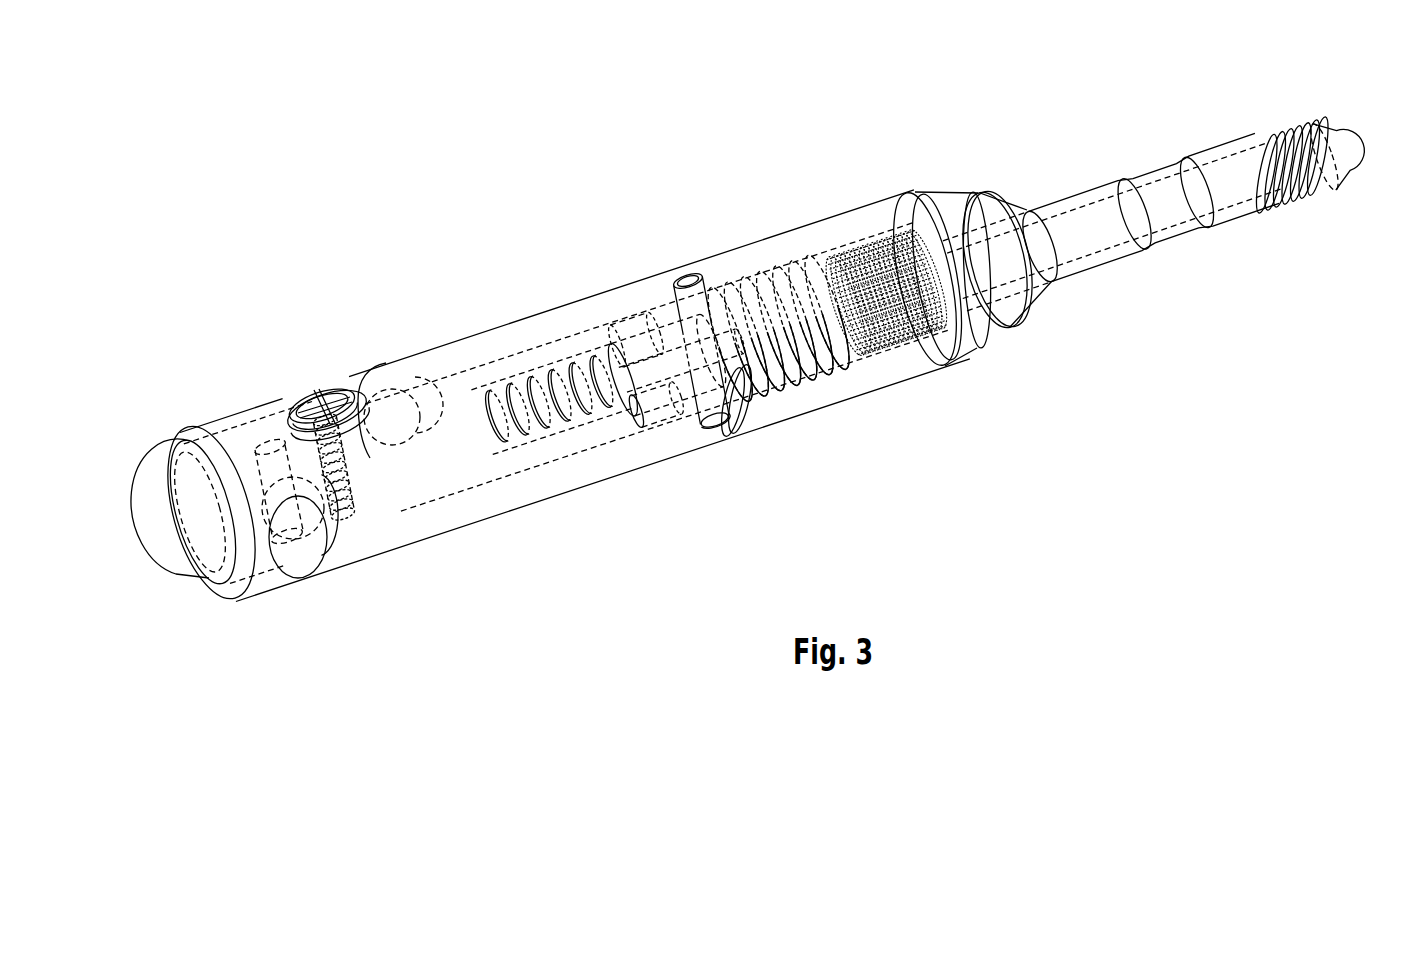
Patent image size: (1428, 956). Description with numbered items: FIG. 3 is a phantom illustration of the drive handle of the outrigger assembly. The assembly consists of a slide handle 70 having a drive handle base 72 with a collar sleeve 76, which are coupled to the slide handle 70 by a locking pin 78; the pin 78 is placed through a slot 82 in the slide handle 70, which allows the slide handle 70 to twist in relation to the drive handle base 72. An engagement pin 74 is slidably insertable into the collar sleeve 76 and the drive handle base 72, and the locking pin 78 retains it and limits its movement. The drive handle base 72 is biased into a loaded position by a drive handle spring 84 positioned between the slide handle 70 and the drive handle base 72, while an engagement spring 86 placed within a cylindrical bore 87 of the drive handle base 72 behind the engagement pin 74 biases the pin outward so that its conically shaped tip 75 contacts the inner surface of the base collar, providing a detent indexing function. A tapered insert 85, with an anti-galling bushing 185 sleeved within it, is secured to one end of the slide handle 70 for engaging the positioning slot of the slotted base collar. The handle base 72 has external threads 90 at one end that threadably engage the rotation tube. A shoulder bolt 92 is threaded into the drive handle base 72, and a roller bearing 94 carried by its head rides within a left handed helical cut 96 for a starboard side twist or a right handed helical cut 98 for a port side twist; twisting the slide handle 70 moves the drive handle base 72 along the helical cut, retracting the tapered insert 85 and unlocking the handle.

The slide handle 70 is at (797, 226).
The drive handle base 72 is at (170, 576).
The engagement pin 74 is at (1237, 183).
The conically shaped tip 75 is at (1360, 132).
The collar sleeve 76 is at (1215, 142).
The locking pin 78 is at (683, 281).
The slot 82 is at (740, 416).
The drive handle spring 84 is at (828, 368).
The tapered insert 85 is at (946, 196).
The bushing 185 is at (1000, 203).
The engagement spring 86 is at (571, 416).
The cylindrical bore 87 is at (519, 382).
The external threads 90 is at (1314, 204).
The shoulder bolt 92 is at (332, 398).
The roller bearing 94 is at (314, 394).
The left handed helical cut 96 is at (302, 563).
The right handed helical cut 98 is at (373, 383).